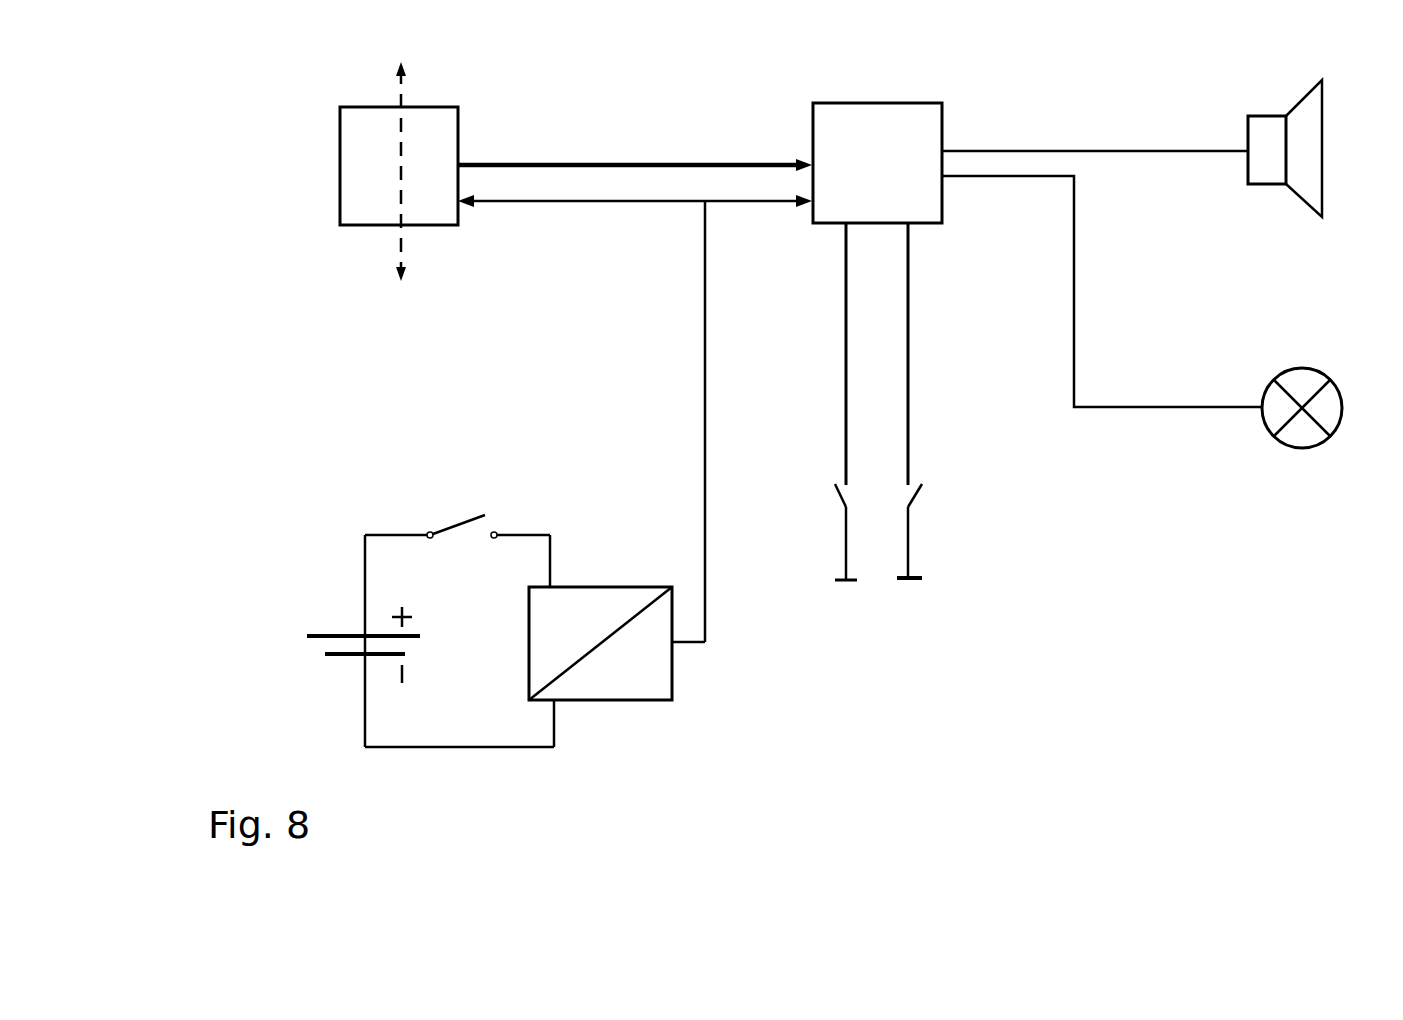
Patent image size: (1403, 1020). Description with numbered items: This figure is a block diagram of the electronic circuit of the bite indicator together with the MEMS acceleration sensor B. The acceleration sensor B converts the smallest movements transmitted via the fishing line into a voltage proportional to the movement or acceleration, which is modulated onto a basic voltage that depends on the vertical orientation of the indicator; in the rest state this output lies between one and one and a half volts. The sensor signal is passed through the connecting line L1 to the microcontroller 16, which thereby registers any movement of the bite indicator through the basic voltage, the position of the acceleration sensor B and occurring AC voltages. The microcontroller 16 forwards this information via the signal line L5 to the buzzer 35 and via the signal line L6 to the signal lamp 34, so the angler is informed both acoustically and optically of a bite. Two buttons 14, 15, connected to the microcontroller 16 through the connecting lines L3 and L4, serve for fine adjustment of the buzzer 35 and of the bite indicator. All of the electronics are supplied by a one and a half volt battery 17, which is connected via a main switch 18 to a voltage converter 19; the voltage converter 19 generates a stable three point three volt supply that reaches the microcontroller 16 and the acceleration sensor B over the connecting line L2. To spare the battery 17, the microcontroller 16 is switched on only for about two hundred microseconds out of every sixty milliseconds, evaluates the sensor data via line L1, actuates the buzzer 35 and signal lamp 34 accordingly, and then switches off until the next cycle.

The MEMS acceleration sensor B is at (399, 171).
The button 14 is at (821, 532).
The button 15 is at (935, 531).
The microcontroller 16 is at (877, 146).
The battery 17 is at (430, 641).
The main switch 18 is at (457, 533).
The voltage converter 19 is at (617, 645).
The signal lamp 34 is at (1302, 388).
The buzzer 35 is at (1285, 145).
The connecting line L1 is at (635, 153).
The connecting line L2 is at (635, 418).
The connecting line L3 is at (825, 354).
The connecting line L4 is at (928, 354).
The signal line L5 is at (1095, 139).
The signal line L6 is at (1102, 292).